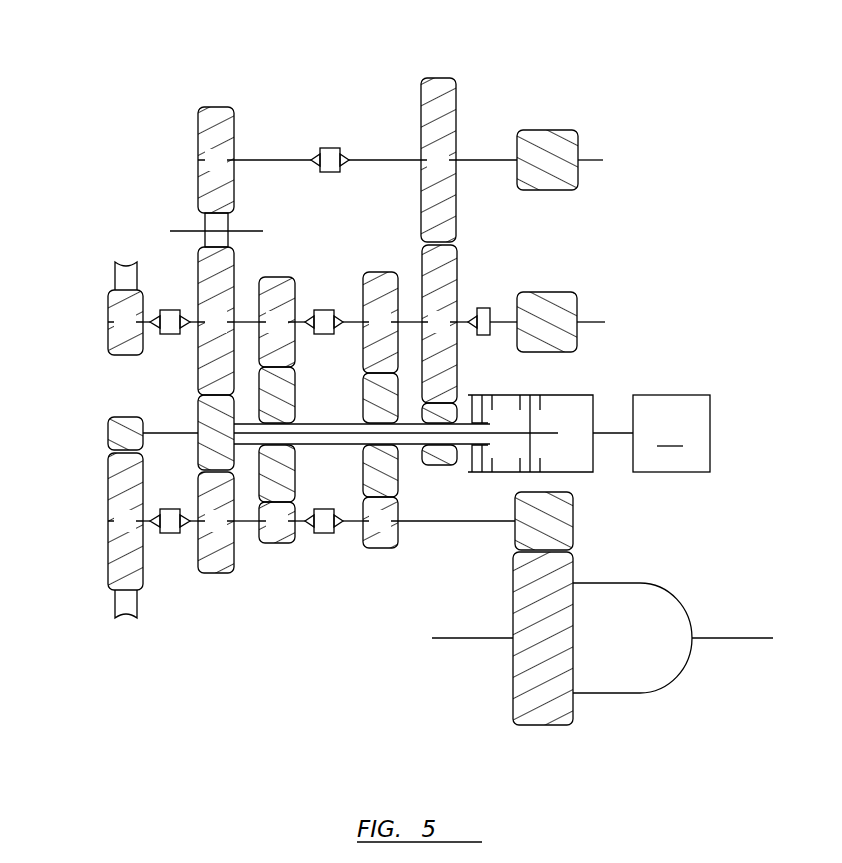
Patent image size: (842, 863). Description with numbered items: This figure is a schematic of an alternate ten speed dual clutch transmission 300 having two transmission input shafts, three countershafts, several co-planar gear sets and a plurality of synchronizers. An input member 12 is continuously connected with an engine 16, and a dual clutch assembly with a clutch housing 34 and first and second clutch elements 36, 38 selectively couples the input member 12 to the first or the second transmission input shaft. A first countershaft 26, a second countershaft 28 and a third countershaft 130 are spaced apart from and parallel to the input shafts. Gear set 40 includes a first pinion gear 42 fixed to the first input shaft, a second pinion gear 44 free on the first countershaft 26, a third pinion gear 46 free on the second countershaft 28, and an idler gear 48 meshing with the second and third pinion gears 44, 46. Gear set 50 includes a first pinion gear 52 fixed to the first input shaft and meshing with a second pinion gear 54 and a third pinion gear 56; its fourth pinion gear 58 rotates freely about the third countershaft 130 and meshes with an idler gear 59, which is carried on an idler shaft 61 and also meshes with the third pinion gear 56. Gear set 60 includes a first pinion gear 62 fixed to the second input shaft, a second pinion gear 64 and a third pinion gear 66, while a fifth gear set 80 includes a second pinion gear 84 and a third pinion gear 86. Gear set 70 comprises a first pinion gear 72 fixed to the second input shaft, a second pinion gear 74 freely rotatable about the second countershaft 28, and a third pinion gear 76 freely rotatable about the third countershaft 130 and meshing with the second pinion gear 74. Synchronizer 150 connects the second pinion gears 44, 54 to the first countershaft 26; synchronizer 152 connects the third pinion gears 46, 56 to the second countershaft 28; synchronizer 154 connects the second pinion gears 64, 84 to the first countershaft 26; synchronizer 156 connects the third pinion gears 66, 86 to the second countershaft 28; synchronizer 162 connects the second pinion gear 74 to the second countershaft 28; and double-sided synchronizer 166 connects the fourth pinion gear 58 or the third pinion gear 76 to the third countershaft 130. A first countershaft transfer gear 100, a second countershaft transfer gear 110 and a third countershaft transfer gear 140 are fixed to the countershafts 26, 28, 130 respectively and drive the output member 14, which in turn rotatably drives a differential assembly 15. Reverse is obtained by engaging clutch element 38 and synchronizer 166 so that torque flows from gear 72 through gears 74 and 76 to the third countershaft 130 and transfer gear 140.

The ten speed dual clutch transmission 300 is at (631, 117).
The fourth pinion gear 58 is at (212, 107).
The third countershaft 130 is at (276, 160).
The synchronizer 166 is at (333, 148).
The third pinion gear 76 is at (445, 78).
The third countershaft transfer gear 140 is at (578, 158).
The idler gear 59 is at (228, 232).
The idler shaft 61 is at (178, 231).
The idler gear 48 is at (115, 272).
The third pinion gear 46 is at (108, 322).
The synchronizer 152 is at (170, 310).
The third pinion gear 56 is at (198, 360).
The first pinion gear 52 is at (200, 412).
The third pinion gear 86 is at (283, 277).
The synchronizer 156 is at (324, 310).
The third pinion gear 66 is at (378, 272).
The second countershaft 28 is at (408, 322).
The second pinion gear 74 is at (457, 360).
The synchronizer 162 is at (485, 308).
The second countershaft transfer gear 110 is at (577, 318).
The input member 12 is at (613, 432).
The clutch element 38 is at (492, 412).
The clutch element 36 is at (538, 412).
The first pinion gear 42 is at (108, 433).
The engine 16 is at (671, 433).
The clutch housing 34 is at (593, 457).
The gear set 70 is at (447, 478).
The first pinion gear 72 is at (433, 465).
The first pinion gear 62 is at (363, 484).
The second pinion gear 84 is at (295, 510).
The second pinion gear 44 is at (108, 557).
The gear set 40 is at (126, 632).
The synchronizer 150 is at (168, 535).
The gear set 50 is at (219, 588).
The second pinion gear 54 is at (235, 558).
The fifth gear set 80 is at (287, 562).
The synchronizer 154 is at (327, 537).
The gear set 60 is at (377, 560).
The second pinion gear 64 is at (398, 537).
The first countershaft 26 is at (452, 523).
The first countershaft transfer gear 100 is at (573, 527).
The output member 14 is at (513, 713).
The differential assembly 15 is at (664, 578).